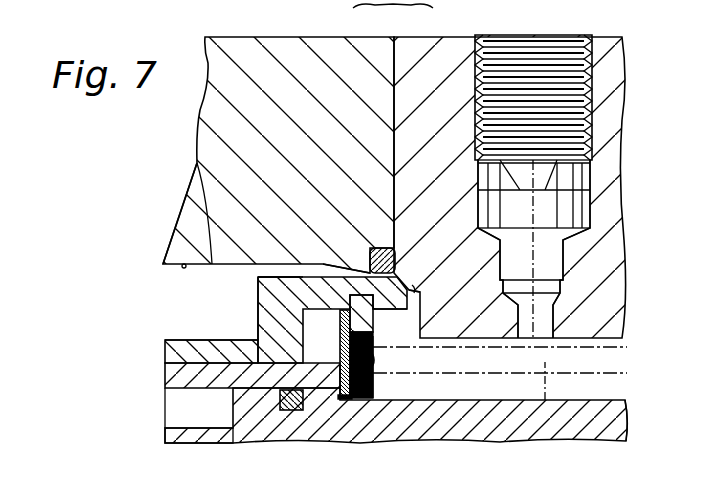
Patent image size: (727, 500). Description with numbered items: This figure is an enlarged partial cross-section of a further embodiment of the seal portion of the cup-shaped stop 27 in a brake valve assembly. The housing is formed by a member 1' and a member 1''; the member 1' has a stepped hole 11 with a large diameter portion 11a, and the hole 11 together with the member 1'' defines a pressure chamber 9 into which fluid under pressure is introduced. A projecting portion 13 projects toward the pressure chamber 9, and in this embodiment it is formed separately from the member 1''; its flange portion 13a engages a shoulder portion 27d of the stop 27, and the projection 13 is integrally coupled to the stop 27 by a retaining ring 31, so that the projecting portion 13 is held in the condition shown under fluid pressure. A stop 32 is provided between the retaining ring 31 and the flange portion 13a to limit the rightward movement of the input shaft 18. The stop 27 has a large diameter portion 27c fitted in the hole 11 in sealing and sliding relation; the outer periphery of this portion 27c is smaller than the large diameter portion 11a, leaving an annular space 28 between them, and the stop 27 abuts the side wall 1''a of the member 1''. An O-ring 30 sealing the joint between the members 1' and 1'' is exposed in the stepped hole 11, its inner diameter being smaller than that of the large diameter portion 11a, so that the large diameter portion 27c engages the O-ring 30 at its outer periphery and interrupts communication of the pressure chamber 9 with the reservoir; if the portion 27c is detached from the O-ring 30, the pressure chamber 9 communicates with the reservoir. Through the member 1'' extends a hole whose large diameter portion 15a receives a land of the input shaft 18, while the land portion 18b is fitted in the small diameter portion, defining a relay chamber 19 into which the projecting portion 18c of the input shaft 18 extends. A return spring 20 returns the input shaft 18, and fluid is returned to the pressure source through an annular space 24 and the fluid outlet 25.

The member 1' is at (278, 141).
The member 1'' is at (510, 173).
The side wall 1''a is at (434, 269).
The fluid outlet 25 is at (534, 52).
The large diameter portion 11a is at (197, 180).
The hole 11 is at (178, 256).
The large diameter portion 27c is at (328, 287).
The shoulder portion 27d is at (258, 272).
The O-ring 30 is at (378, 249).
The annular space 28 is at (262, 272).
The cup-shaped stop 27 is at (213, 363).
The pressure chamber 9 is at (200, 318).
The projecting portion 13 is at (323, 335).
The retaining ring 31 is at (371, 312).
The flange portion 13a is at (341, 400).
The large diameter portion 15a is at (614, 338).
The land portion 18b is at (253, 422).
The input shaft 18 is at (500, 420).
The projecting portion 18c is at (189, 443).
The relay chamber 19 is at (180, 412).
The stop 32 is at (380, 432).
The return spring 20 is at (545, 400).
The annular space 24 is at (603, 386).